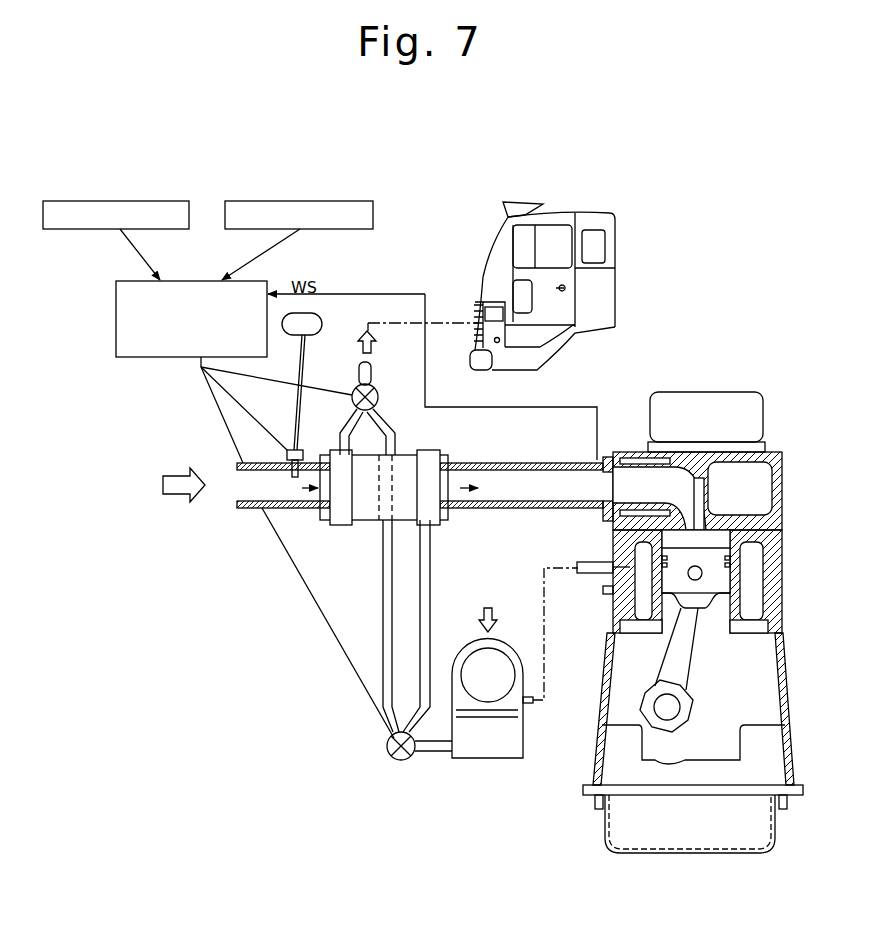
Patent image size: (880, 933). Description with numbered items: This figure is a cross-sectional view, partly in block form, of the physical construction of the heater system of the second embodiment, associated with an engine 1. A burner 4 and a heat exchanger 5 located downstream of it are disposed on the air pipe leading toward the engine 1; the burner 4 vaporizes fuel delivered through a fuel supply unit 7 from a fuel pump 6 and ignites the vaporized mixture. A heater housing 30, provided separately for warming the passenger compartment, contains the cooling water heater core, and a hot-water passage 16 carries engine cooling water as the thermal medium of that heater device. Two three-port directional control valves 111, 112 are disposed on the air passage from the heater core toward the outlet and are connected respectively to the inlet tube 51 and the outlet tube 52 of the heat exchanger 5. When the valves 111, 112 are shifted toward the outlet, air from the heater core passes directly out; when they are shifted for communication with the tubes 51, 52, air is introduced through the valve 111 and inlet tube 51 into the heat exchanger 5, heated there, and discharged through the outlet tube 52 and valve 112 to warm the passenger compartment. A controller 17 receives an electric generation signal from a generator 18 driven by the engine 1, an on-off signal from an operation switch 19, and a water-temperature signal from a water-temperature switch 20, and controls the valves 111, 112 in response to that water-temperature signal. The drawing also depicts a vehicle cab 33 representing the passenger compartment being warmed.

The engine 1 is at (716, 390).
The burner 4 is at (300, 449).
The heat exchanger 5 is at (412, 453).
The fuel pump 6 is at (322, 321).
The fuel supply unit 7 is at (301, 374).
The hot-water passage 16 is at (583, 578).
The controller 17 is at (157, 352).
The generator 18 is at (300, 200).
The operation switch 19 is at (128, 200).
The water-temperature switch 20 is at (603, 612).
The heater housing 30 is at (516, 746).
The vehicle cab 33 is at (555, 232).
The inlet tube 51 is at (430, 623).
The outlet tube 52 is at (348, 432).
The directional control valve 111 is at (403, 762).
The directional control valve 112 is at (377, 390).